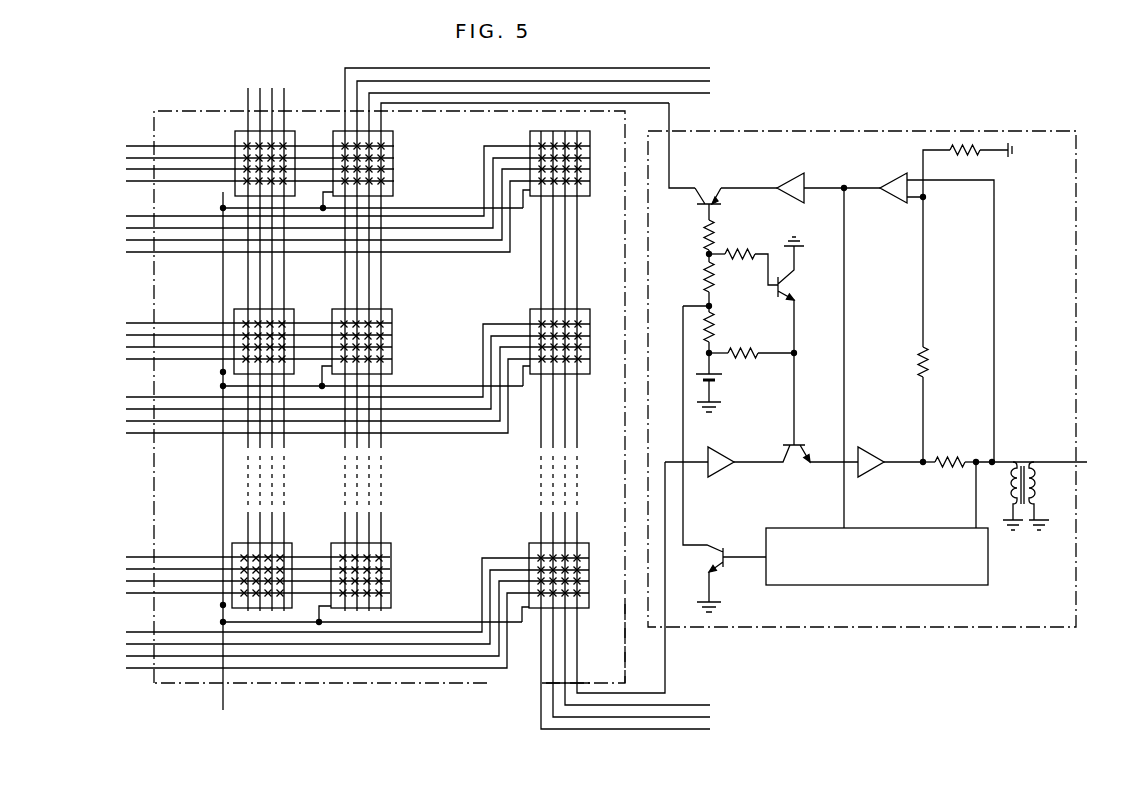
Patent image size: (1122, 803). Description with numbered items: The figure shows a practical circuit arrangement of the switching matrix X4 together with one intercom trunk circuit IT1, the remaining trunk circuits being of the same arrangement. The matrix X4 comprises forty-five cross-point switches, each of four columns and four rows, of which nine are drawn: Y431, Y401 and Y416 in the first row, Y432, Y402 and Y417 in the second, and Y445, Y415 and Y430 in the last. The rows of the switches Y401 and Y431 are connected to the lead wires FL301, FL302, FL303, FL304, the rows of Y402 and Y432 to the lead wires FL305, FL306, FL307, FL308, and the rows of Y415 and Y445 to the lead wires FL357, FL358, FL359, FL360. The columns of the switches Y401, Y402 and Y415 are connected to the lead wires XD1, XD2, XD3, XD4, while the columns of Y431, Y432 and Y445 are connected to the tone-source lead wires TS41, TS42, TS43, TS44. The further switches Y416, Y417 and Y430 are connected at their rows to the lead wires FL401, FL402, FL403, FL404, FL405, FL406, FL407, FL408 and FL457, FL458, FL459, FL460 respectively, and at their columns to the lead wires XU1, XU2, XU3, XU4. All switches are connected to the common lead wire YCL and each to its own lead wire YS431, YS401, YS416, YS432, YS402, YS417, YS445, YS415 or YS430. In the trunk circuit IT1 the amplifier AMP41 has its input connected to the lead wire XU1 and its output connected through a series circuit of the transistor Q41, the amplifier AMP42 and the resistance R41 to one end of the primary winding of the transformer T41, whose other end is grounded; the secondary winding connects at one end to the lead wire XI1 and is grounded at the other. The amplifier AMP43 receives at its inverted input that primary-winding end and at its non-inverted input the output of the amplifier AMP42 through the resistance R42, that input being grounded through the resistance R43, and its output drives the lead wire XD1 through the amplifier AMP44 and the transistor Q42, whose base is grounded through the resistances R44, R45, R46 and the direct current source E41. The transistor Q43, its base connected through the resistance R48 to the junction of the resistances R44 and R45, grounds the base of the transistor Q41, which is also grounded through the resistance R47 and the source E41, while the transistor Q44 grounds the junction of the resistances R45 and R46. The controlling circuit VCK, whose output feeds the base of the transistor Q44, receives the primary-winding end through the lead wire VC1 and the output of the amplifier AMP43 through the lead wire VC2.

The lead wire TS41 is at (242, 328).
The lead wire TS42 is at (257, 328).
The lead wire TS43 is at (272, 328).
The lead wire TS44 is at (287, 328).
The lead wire XD4 is at (544, 336).
The lead wire XD3 is at (550, 342).
The lead wire XD2 is at (556, 348).
The lead wire XD1 is at (542, 356).
The lead wire XU4 is at (641, 432).
The lead wire XU3 is at (647, 426).
The lead wire XU2 is at (653, 420).
The lead wire XU1 is at (638, 413).
The cross-point switch Y431 is at (278, 155).
The cross-point switch Y401 is at (375, 155).
The cross-point switch Y416 is at (573, 155).
The cross-point switch Y432 is at (277, 332).
The cross-point switch Y402 is at (375, 332).
The cross-point switch Y417 is at (573, 332).
The cross-point switch Y445 is at (274, 568).
The cross-point switch Y415 is at (372, 568).
The cross-point switch Y430 is at (571, 568).
The lead wire FL301 is at (228, 145).
The lead wire FL302 is at (228, 157).
The lead wire FL303 is at (228, 168).
The lead wire FL304 is at (228, 180).
The lead wire FL401 is at (326, 184).
The lead wire FL402 is at (326, 196).
The lead wire FL403 is at (326, 208).
The lead wire FL404 is at (326, 220).
The lead wire FL305 is at (227, 322).
The lead wire FL306 is at (227, 334).
The lead wire FL307 is at (227, 346).
The lead wire FL308 is at (227, 358).
The lead wire FL405 is at (326, 364).
The lead wire FL406 is at (326, 376).
The lead wire FL407 is at (326, 388).
The lead wire FL408 is at (326, 400).
The lead wire FL357 is at (226, 556).
The lead wire FL358 is at (226, 568).
The lead wire FL359 is at (226, 580).
The lead wire FL360 is at (226, 592).
The lead wire FL457 is at (325, 598).
The lead wire FL458 is at (325, 610).
The lead wire FL459 is at (325, 622).
The lead wire FL460 is at (325, 634).
The lead wire YCL is at (219, 460).
The lead wire YS431 is at (235, 188).
The lead wire YS401 is at (394, 188).
The lead wire YS416 is at (523, 270).
The lead wire YS432 is at (234, 372).
The lead wire YS402 is at (392, 365).
The lead wire YS417 is at (517, 452).
The lead wire YS445 is at (232, 599).
The lead wire YS415 is at (390, 599).
The lead wire YS430 is at (541, 687).
The switching matrix X4 is at (612, 641).
The intercom trunk circuit IT1 is at (862, 379).
The transistor Q42 is at (736, 195).
The transistor Q43 is at (801, 341).
The transistor Q41 is at (796, 463).
The transistor Q44 is at (724, 459).
The resistance R41 is at (951, 470).
The resistance R42 is at (937, 329).
The resistance R43 is at (967, 170).
The resistance R44 is at (694, 241).
The resistance R45 is at (693, 287).
The resistance R46 is at (722, 334).
The resistance R47 is at (753, 345).
The resistance R48 is at (743, 260).
The amplifier AMP41 is at (711, 456).
The amplifier AMP42 is at (892, 456).
The amplifier AMP43 is at (919, 317).
The amplifier AMP44 is at (810, 309).
The direct current source E41 is at (720, 382).
The transformer T41 is at (1026, 486).
The lead wire XI1 is at (1047, 462).
The lead wire VC1 is at (959, 496).
The lead wire VC2 is at (826, 495).
The controlling circuit VCK is at (877, 556).